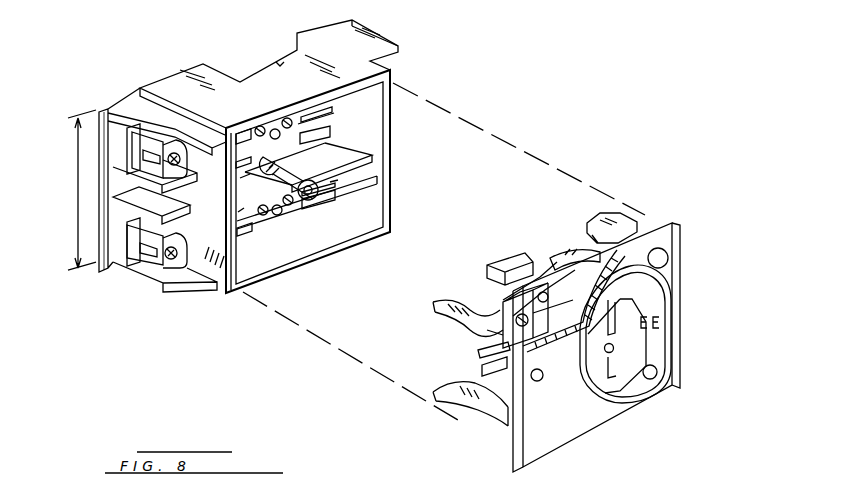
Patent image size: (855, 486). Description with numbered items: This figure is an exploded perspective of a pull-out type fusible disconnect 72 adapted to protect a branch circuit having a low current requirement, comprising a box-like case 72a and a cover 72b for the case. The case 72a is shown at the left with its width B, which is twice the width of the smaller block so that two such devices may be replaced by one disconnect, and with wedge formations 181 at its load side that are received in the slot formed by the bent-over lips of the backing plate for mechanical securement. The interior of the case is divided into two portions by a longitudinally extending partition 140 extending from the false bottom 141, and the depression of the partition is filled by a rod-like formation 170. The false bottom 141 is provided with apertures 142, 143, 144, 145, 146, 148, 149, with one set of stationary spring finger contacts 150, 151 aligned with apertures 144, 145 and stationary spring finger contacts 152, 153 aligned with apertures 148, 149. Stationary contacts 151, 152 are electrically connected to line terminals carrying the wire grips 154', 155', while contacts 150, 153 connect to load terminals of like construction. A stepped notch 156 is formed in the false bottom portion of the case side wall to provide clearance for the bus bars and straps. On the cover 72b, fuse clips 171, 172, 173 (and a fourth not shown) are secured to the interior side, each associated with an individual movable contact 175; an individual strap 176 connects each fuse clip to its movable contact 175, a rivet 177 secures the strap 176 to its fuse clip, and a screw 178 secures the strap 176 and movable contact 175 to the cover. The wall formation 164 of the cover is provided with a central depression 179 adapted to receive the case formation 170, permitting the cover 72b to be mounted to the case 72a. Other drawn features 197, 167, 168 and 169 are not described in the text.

The pull-out type fusible disconnect 72 is at (348, 366).
The case 72a is at (188, 65).
The cover 72b is at (692, 290).
The wedge formations 181 is at (106, 110).
The width of case B is at (82, 190).
The wire grip 154' is at (155, 148).
The wire grip 155' is at (165, 262).
The stepped notch 156 is at (260, 72).
The partition 140 is at (366, 154).
The false bottom 141 is at (327, 120).
The aperture 142 is at (334, 109).
The aperture 143 is at (244, 132).
The aperture 144 is at (254, 154).
The aperture 145 is at (332, 133).
The aperture 146 is at (240, 210).
The aperture 148 is at (338, 200).
The aperture 149 is at (272, 230).
The stationary spring finger contact 150 is at (262, 173).
The stationary spring finger contact 151 is at (326, 148).
The stationary spring finger contact 152 is at (319, 208).
The stationary spring finger contact 153 is at (244, 238).
The rod-like formation 170 is at (286, 170).
The tab 197 is at (338, 182).
The wall formation 164 is at (488, 346).
The rim 167 is at (673, 333).
The hole 168 is at (602, 386).
The hole 169 is at (603, 386).
The fuse clip 171 is at (518, 252).
The fuse clip 172 is at (600, 224).
The fuse clip 173 is at (482, 362).
The movable contact 175 is at (559, 258).
The strap 176 is at (503, 292).
The rivet 177 is at (546, 288).
The screw 178 is at (487, 333).
The central depression 179 is at (606, 350).